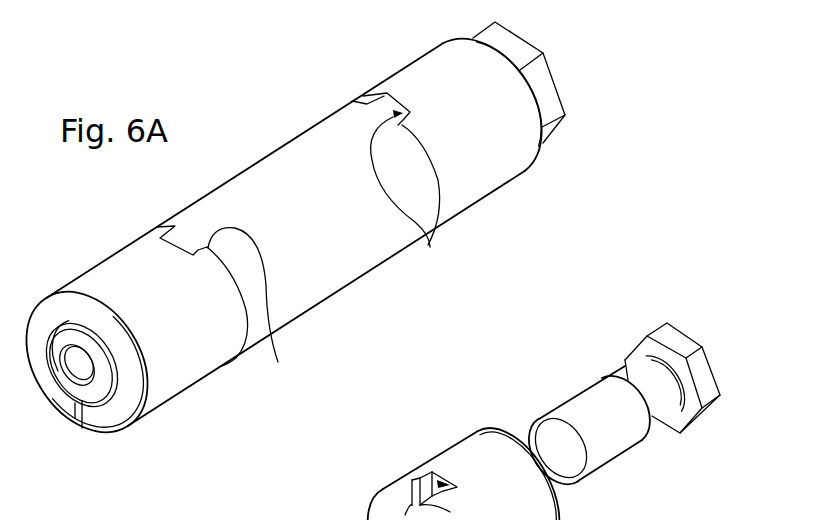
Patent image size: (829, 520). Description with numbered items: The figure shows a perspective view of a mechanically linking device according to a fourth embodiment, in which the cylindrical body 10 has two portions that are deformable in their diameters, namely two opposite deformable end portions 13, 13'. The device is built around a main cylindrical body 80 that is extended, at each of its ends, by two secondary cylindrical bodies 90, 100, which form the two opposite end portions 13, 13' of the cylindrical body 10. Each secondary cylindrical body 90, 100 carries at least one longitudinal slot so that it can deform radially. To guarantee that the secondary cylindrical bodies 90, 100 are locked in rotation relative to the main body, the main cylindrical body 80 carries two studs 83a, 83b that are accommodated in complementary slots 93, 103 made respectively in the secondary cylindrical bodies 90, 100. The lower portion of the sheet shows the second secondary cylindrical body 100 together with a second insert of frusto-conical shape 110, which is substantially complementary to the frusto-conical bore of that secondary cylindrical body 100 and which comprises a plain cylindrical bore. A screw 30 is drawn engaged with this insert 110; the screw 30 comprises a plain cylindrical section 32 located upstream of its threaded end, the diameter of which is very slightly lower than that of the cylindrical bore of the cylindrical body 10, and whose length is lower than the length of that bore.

In FIG. 6A, the cylindrical body 10 is at (243, 107).
In FIG. 6A, the deformable end portion 13 is at (86, 383).
In FIG. 6A, the deformable end portion 13' is at (547, 107).
In FIG. 6B, the screw 30 is at (667, 433).
In FIG. 6B, the plain cylindrical section 32 is at (530, 440).
In FIG. 6A, the main cylindrical body 80 is at (345, 273).
In FIG. 6A, the stud 83a is at (197, 244).
In FIG. 6A, the stud 83b is at (363, 96).
In FIG. 6B, the stud 83b is at (313, 510).
In FIG. 6A, the secondary cylindrical body 90 is at (98, 270).
In FIG. 6A, the slot 93 is at (272, 335).
In FIG. 6A, the secondary cylindrical body 100 is at (403, 85).
In FIG. 6A, the slot 103 is at (431, 248).
In FIG. 6B, the slot 103 is at (433, 468).
In FIG. 6B, the second insert of frusto-conical shape 110 is at (605, 455).